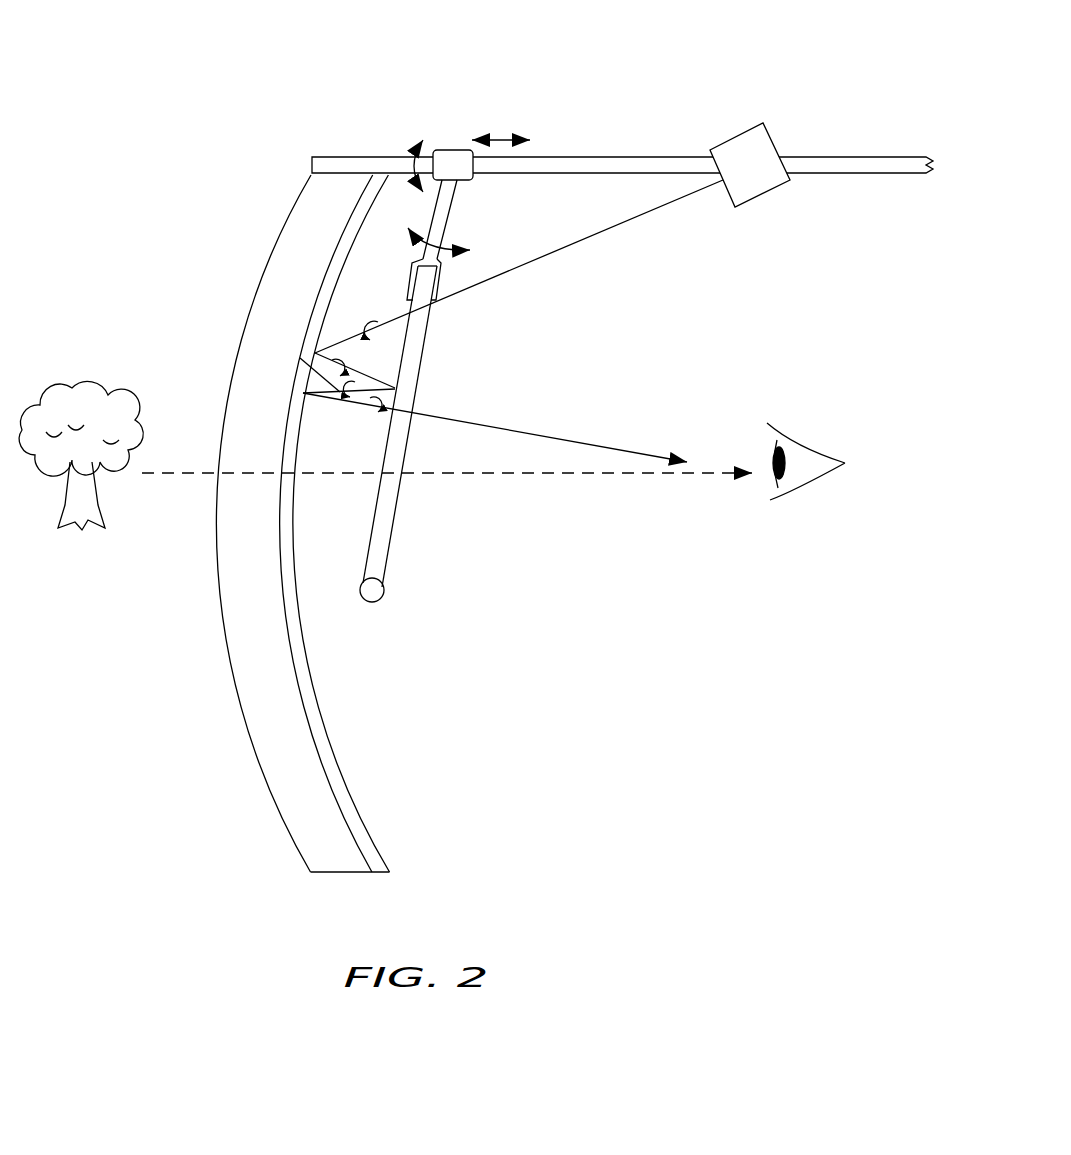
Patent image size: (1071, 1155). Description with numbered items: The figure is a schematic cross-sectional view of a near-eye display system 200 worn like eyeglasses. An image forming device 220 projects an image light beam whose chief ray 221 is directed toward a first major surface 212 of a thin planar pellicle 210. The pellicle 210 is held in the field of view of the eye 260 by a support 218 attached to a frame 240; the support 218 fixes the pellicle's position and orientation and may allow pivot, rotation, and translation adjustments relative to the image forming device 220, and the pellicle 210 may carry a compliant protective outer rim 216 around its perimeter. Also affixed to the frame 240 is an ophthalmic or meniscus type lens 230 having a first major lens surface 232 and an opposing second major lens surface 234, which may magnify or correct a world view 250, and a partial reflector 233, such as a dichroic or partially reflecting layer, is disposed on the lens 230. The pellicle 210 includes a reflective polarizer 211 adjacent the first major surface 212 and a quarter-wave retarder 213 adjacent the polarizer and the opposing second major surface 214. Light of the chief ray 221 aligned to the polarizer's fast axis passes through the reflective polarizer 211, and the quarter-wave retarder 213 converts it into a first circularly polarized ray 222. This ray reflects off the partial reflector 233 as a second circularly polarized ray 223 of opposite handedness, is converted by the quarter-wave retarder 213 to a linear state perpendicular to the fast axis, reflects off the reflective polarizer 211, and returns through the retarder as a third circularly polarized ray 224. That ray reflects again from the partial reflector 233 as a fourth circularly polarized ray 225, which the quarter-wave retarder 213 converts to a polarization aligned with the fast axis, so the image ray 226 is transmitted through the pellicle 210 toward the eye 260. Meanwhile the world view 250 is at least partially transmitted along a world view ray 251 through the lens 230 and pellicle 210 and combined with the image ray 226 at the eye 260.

The near-eye display system 200 is at (200, 40).
The pellicle 210 is at (324, 433).
The reflective polarizer 211 is at (301, 433).
The first major surface 212 is at (392, 538).
The quarter-wave retarder 213 is at (383, 503).
The second major surface 214 is at (365, 560).
The protective outer rim 216 is at (382, 598).
The support 218 is at (450, 160).
The image forming device 220 is at (773, 133).
The chief ray 221 is at (590, 248).
The first circularly polarized ray 222 is at (387, 318).
The second circularly polarized ray 223 is at (372, 374).
The third circularly polarized ray 224 is at (315, 353).
The fourth circularly polarized ray 225 is at (340, 397).
The image ray 226 is at (553, 438).
The lens 230 is at (320, 484).
The first major lens surface 232 is at (368, 827).
The partial reflector 233 is at (342, 790).
The second major lens surface 234 is at (275, 800).
The frame 240 is at (593, 156).
The world view 250 is at (93, 356).
The world view ray 251 is at (618, 474).
The eye 260 is at (806, 440).